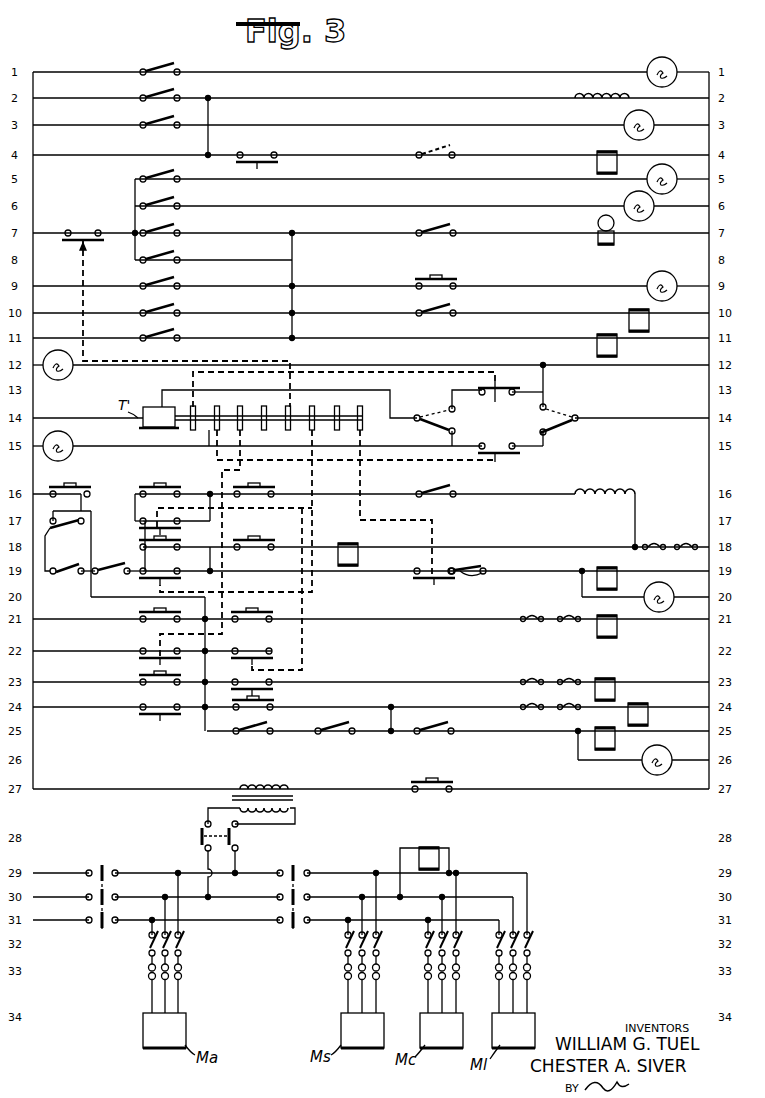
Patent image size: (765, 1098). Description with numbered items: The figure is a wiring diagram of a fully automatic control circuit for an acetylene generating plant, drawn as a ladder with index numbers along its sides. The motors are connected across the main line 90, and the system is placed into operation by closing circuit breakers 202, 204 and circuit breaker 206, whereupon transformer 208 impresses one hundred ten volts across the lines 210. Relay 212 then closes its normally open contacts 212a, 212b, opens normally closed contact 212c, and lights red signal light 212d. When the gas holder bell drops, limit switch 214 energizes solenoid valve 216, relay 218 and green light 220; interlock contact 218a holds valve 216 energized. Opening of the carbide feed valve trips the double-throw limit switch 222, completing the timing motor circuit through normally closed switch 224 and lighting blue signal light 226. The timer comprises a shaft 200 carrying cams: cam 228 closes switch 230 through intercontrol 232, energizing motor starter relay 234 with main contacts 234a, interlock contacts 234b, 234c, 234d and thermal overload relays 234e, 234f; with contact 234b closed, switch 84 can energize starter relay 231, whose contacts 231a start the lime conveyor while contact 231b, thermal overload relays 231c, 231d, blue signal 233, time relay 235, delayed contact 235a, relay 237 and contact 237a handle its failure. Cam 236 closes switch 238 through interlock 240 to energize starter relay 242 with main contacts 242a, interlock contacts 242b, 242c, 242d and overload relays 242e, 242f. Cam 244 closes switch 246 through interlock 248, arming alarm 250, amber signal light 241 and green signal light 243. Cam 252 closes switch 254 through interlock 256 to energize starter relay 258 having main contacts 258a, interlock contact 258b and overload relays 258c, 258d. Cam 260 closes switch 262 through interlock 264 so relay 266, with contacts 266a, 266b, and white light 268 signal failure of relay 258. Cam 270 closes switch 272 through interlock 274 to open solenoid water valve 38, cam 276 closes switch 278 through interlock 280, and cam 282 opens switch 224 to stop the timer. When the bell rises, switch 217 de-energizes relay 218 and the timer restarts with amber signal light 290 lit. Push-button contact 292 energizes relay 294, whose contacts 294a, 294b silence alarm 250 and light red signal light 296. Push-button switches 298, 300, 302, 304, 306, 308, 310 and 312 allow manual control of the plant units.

The solenoid water valve 38 is at (612, 490).
The switch 84 is at (270, 736).
The main line 90 is at (60, 873).
The shaft 200 is at (160, 429).
The circuit breaker 202 is at (108, 912).
The circuit breaker 204 is at (302, 912).
The circuit breaker 206 is at (238, 837).
The transformer 208 is at (298, 798).
The lines 210 is at (33, 754).
The relay 212 is at (434, 860).
The normally open contact 212a is at (163, 62).
The normally open contact 212b is at (62, 575).
The normally closed contact 212c is at (178, 279).
The red signal light 212d is at (674, 67).
The limit switch 214 is at (178, 88).
The solenoid valve 216 is at (621, 94).
The normally closed switch 217 is at (450, 148).
The relay 218 is at (597, 164).
The normally open contact 218a is at (155, 120).
The green light 220 is at (652, 120).
The double-pole double-throw limit switch 222 is at (552, 417).
The normally closed mechanically openable switch 224 is at (478, 391).
The blue signal light 226 is at (62, 377).
The cam 228 is at (268, 404).
The switch 230 is at (142, 652).
The automatic motor starter relay 231 is at (646, 717).
The contacts 231a is at (529, 942).
The normally closed contact 231b is at (456, 734).
The thermal overload relay 231c is at (516, 704).
The thermal overload relay 231d is at (564, 704).
The mechanical intercontrol 232 is at (186, 642).
The blue signal 233 is at (642, 770).
The automatic motor-starter relay 234 is at (616, 690).
The contacts 234a is at (339, 939).
The normally open interlock contact 234b is at (358, 736).
The normally closed interlock contact 234c is at (183, 197).
The normally closed interlock contact 234d is at (183, 252).
The thermal overload relay 234e is at (521, 678).
The thermal overload relay 234f is at (575, 668).
The time relay 235 is at (616, 742).
The normally open delayed closing contact 235a is at (178, 331).
The cam 236 is at (264, 406).
The relay 237 is at (618, 349).
The normally closed contact 237a is at (128, 564).
The switch 238 is at (268, 649).
The mechanical interlock 240 is at (304, 648).
The amber signal light 241 is at (672, 174).
The automatic starter relay 242 is at (616, 636).
The main contacts 242a is at (178, 941).
The normally open interlock contact 242b is at (66, 534).
The normally closed interlock contact 242c is at (143, 178).
The normally closed interlock contact 242d is at (183, 224).
The thermal overload relay 242e is at (524, 618).
The thermal overload relay 242f is at (568, 617).
The green signal light 243 is at (626, 200).
The cam 244 is at (313, 406).
The switch 246 is at (100, 220).
The interlock 248 is at (82, 270).
The alarm 250 is at (598, 228).
The cam 252 is at (337, 408).
The switch 254 is at (160, 568).
The mechanical interlock 256 is at (282, 590).
The motor starter relay 258 is at (358, 556).
The main motor contacts 258a is at (430, 940).
The normally closed interlock contact 258b is at (498, 562).
The thermal overload relay 258c is at (646, 543).
The thermal overload relay 258d is at (692, 554).
The cam 260 is at (362, 428).
The switch 262 is at (431, 577).
The interlock 264 is at (416, 514).
The relay 266 is at (628, 560).
The normally closed interlock contact 266a is at (470, 489).
The normally open contact 266b is at (178, 305).
The white light 268 is at (686, 585).
The cam 270 is at (386, 404).
The switch 272 is at (142, 521).
The interlock 274 is at (283, 512).
The cam 276 is at (209, 448).
The switch 278 is at (500, 437).
The interlock 280 is at (430, 460).
The cam 282 is at (176, 392).
The amber signal light 290 is at (70, 455).
The push-button contact 292 is at (453, 278).
The relay 294 is at (648, 322).
The normally open contact 294a is at (452, 302).
The normally closed contact 294b is at (450, 228).
The red signal light 296 is at (653, 280).
The push-button switch 298 is at (455, 778).
The push-button switch 300 is at (233, 696).
The push-button switch 302 is at (246, 680).
The push-button switch 304 is at (274, 616).
The push-button switch 306 is at (178, 546).
The push-button switch 308 is at (208, 478).
The push-button switch 310 is at (175, 162).
The push-button switch 312 is at (76, 478).